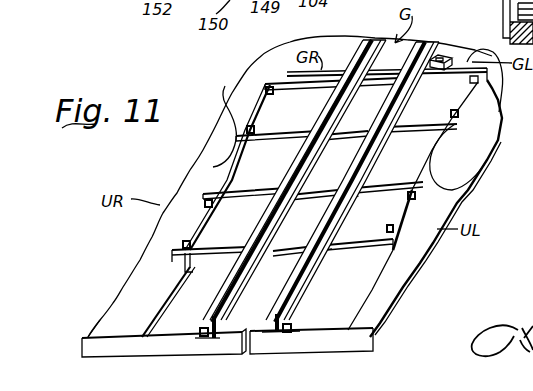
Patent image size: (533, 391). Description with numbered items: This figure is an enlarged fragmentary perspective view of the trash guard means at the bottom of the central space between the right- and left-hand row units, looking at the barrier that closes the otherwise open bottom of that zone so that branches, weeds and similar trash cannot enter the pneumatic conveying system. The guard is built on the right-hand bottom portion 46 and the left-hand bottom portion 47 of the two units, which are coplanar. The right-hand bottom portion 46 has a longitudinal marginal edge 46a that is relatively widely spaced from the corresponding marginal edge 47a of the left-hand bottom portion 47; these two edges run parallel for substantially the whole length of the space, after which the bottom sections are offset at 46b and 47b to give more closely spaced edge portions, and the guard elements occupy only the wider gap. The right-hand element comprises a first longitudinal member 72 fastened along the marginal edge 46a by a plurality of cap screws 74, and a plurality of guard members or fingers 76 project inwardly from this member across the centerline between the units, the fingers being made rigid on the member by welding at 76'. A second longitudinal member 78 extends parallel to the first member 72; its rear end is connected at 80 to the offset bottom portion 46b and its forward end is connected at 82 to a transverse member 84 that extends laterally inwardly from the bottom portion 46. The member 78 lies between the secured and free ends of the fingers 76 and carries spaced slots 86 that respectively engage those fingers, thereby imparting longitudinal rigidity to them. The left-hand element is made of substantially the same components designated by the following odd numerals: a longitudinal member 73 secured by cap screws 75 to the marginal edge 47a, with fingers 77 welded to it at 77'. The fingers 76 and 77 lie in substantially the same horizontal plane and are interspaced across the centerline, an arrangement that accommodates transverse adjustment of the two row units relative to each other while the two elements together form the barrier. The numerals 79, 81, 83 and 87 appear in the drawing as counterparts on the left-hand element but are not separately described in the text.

The right-hand bottom portion 46 is at (93, 328).
The longitudinal marginal edge 46a is at (162, 299).
The offset bottom portion 46b is at (336, 42).
The left-hand bottom portion 47 is at (388, 321).
The marginal edge 47a is at (367, 281).
The offset bottom portion 47b is at (450, 37).
The first longitudinal member 72 is at (213, 167).
The longitudinal member 73 is at (436, 160).
The cap screws 74 is at (248, 133).
The cap screws 75 is at (416, 208).
The guard members or fingers 76 is at (290, 189).
The welding 76' is at (212, 167).
The fingers 77 is at (392, 187).
The welding 77' is at (490, 122).
The second longitudinal member 78 is at (299, 165).
The panel 79 is at (359, 163).
The rear end connection 80 is at (370, 36).
The clip 81 is at (446, 58).
The forward end connection 82 is at (203, 339).
The right foot 83 is at (286, 338).
The transverse member 84 is at (154, 352).
The spaced slots 86 is at (260, 253).
The middle upright 87 is at (323, 252).